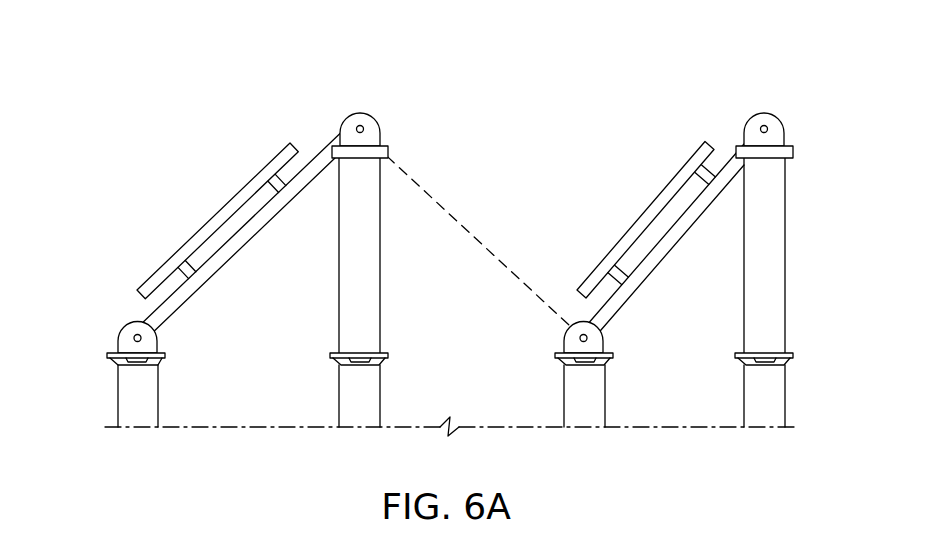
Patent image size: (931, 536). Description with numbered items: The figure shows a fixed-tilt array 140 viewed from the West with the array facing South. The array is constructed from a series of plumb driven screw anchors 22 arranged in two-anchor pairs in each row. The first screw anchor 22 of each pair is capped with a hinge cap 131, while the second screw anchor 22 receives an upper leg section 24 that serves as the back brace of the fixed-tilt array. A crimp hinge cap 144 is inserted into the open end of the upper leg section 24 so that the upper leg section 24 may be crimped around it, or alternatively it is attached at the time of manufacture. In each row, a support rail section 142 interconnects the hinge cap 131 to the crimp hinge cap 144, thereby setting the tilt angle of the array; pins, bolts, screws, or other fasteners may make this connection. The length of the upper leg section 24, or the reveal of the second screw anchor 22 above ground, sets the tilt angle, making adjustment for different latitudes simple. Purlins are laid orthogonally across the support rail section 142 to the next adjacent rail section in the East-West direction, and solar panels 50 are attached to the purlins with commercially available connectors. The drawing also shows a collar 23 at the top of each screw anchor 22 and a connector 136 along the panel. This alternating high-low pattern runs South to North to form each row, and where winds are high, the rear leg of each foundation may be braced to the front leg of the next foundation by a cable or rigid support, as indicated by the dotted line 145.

The fixed-tilt array 140 is at (187, 123).
The crimp hinge cap 144 is at (360, 113).
The panel connector / clamp 136 is at (272, 172).
The solar panels 50 is at (199, 228).
The support rail section 142 is at (253, 238).
The upper leg section 24 is at (339, 257).
The dotted line 145 is at (477, 224).
The hinge cap 131 is at (118, 337).
The post flange 23 is at (109, 359).
The plumb driven screw anchors 22 is at (158, 398).